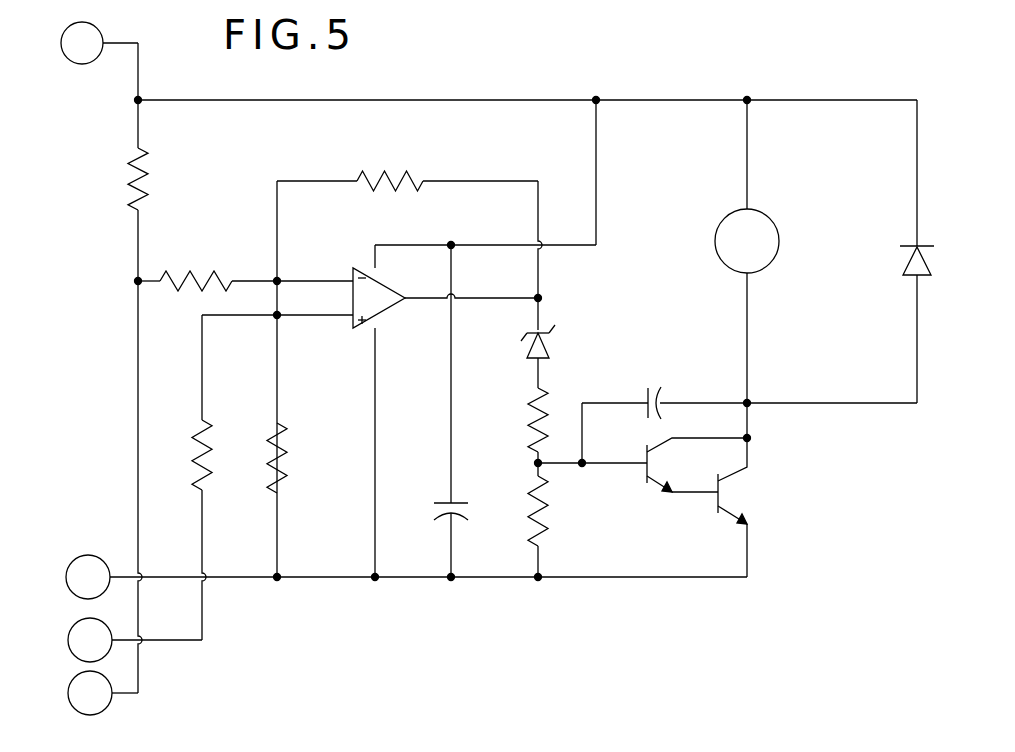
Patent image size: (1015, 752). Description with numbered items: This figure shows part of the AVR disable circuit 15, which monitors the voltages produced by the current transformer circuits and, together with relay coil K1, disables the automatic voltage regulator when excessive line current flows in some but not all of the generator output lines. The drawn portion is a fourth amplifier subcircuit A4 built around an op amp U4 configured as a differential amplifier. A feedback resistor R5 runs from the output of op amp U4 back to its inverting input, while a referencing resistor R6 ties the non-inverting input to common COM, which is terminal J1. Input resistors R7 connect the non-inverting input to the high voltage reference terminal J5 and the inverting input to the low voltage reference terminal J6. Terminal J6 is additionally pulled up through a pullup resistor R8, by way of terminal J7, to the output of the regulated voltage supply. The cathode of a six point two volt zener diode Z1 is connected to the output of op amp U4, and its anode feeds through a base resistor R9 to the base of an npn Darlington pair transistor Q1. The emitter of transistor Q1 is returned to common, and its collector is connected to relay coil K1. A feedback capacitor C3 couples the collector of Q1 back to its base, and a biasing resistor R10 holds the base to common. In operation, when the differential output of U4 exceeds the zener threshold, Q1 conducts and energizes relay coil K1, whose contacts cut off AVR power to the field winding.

The terminal J7 is at (99, 43).
The terminal J1 is at (88, 577).
The high voltage reference terminal J5 is at (135, 640).
The low voltage reference terminal J6 is at (103, 693).
The pullup resistor R8 is at (155, 189).
The input resistors R7 is at (220, 243).
The feedback resistor R5 is at (402, 175).
The referencing resistor R6 is at (287, 470).
The base resistor R9 is at (529, 425).
The biasing resistor R10 is at (549, 524).
The op amp U4 is at (379, 298).
The zener diode Z1 is at (552, 350).
The feedback capacitor C3 is at (646, 395).
The npn Darlington pair transistor Q1 is at (670, 490).
The relay coil K1 is at (747, 241).
The fourth amplifier subcircuit A4 is at (534, 66).
The AVR disable circuit 15 is at (910, 475).
The common COM is at (493, 578).